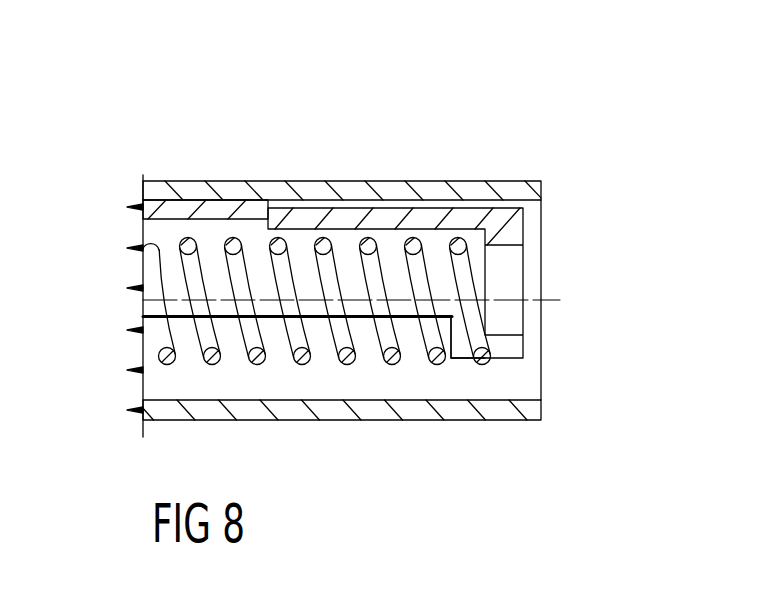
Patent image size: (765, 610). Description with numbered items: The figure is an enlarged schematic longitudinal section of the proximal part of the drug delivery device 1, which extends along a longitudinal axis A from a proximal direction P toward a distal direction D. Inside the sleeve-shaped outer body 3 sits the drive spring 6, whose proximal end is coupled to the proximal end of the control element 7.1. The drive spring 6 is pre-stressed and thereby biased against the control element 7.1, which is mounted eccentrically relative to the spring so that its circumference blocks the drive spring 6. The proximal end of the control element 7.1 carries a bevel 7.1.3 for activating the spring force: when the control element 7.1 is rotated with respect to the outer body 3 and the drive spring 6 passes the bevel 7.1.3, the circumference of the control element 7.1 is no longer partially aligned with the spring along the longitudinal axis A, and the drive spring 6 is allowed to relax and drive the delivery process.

The drug delivery device 1 is at (327, 159).
The outer body 3 is at (433, 181).
The drive spring 6 is at (344, 362).
The control element 7.1 is at (510, 229).
The bevel 7.1.3 is at (457, 347).
The distal direction D is at (119, 306).
The proximal direction P is at (369, 301).
The longitudinal axis A is at (547, 300).